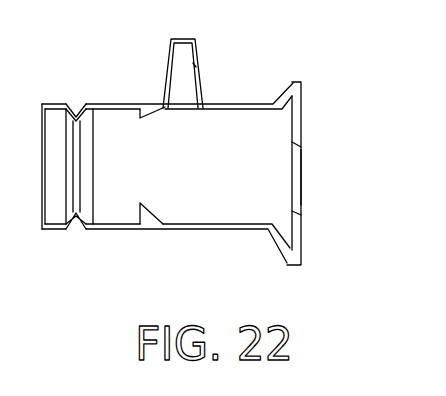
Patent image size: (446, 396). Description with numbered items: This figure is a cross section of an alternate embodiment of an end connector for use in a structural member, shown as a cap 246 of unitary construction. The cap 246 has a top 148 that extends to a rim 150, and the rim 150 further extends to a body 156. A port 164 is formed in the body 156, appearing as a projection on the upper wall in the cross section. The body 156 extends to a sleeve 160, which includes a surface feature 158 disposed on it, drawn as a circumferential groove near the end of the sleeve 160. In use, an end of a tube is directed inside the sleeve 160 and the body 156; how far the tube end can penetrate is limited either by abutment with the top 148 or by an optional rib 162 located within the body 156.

The top 148 is at (303, 191).
The rim 150 is at (288, 84).
The body 156 is at (143, 231).
The surface feature 158 is at (72, 228).
The sleeve 160 is at (52, 103).
The rib 162 is at (165, 107).
The port 164 is at (200, 74).
The cap 246 is at (302, 162).